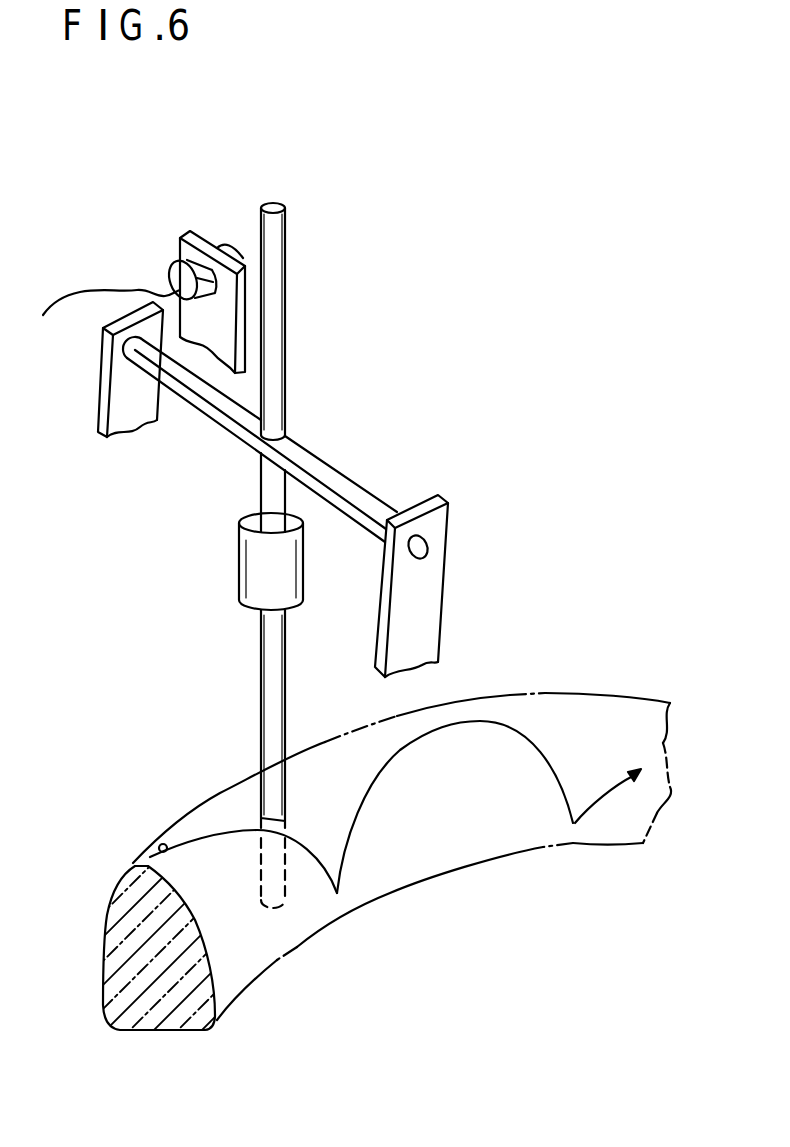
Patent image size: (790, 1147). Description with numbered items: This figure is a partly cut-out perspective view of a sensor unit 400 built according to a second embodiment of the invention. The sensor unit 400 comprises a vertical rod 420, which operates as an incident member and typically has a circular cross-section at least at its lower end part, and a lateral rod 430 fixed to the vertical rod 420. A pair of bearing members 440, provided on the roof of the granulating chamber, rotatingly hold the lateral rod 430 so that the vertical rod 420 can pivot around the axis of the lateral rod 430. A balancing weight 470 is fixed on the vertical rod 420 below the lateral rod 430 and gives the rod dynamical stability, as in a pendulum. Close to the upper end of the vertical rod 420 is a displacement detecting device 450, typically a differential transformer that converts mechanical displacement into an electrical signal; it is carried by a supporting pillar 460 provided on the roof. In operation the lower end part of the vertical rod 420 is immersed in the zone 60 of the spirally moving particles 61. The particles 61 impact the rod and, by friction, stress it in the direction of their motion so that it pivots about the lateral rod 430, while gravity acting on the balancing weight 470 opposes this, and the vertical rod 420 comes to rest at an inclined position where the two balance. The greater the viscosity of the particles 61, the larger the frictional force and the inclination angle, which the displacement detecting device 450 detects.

The sensor unit 400 is at (360, 257).
The vertical rod 420 is at (267, 672).
The lateral rod 430 is at (353, 495).
The bearing member 440 is at (128, 405).
The displacement detecting device 450 is at (178, 250).
The supporting pillar 460 is at (199, 240).
The balancing weight 470 is at (248, 572).
The zone of spirally moving particles 60 is at (402, 878).
The particles 61 is at (159, 846).